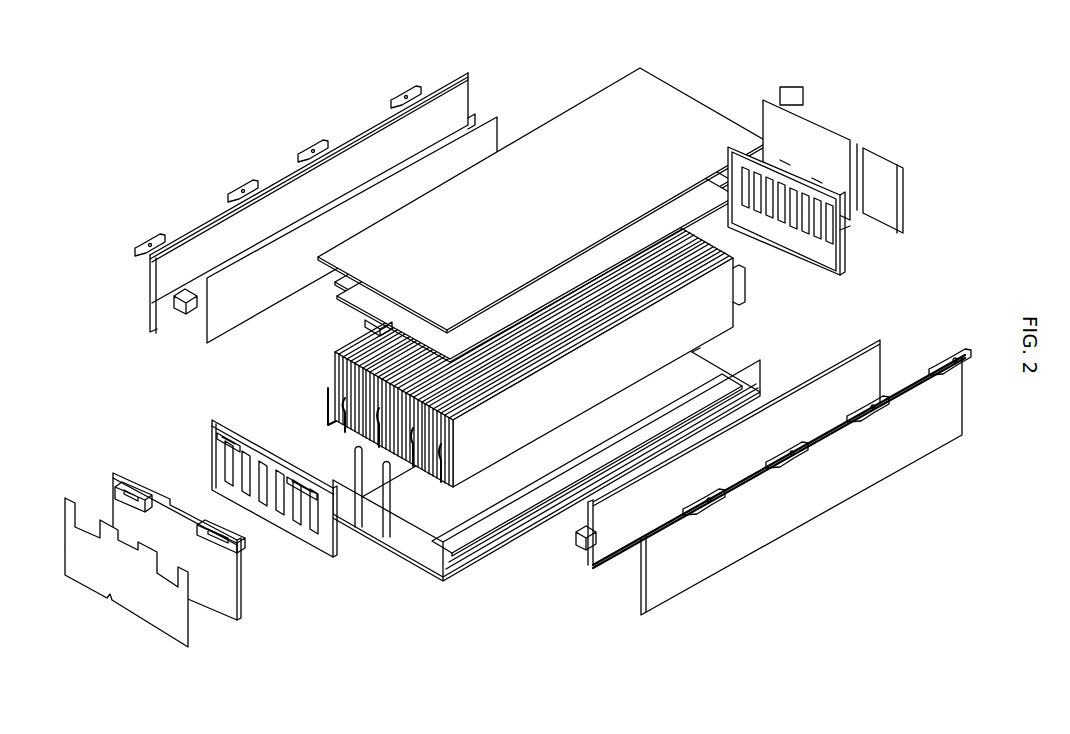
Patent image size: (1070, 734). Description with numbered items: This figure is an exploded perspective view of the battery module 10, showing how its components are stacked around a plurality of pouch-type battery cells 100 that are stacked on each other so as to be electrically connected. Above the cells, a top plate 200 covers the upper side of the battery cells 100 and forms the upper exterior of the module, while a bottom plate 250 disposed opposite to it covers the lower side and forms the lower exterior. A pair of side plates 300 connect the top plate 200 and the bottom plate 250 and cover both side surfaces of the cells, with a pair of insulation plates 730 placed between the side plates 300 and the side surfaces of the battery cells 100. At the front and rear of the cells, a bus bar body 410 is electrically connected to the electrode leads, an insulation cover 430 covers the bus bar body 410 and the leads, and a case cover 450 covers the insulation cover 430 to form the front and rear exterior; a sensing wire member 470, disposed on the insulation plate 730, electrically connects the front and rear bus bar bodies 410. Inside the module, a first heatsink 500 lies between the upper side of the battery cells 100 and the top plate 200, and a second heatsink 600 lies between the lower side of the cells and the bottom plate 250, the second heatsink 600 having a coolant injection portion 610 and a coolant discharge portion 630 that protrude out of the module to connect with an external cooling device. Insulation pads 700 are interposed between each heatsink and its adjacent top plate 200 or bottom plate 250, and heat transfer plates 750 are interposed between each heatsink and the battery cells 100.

The battery module 10 is at (318, 56).
The battery cell 100 is at (322, 372).
The top plate 200 is at (663, 93).
The bottom plate 250 is at (507, 537).
The side plate 300 is at (531, 351).
The bus bar body 410 is at (302, 540).
The insulation cover 430 is at (218, 600).
The case cover 450 is at (166, 620).
The sensing wire member 470 is at (174, 310).
The first heatsink 500 is at (712, 195).
The second heatsink 600 is at (576, 470).
The coolant injection portion 610 is at (385, 542).
The coolant discharge portion 630 is at (358, 528).
The insulation pad 700 is at (437, 560).
The insulation plate 730 is at (217, 335).
The heat transfer plate 750 is at (343, 298).